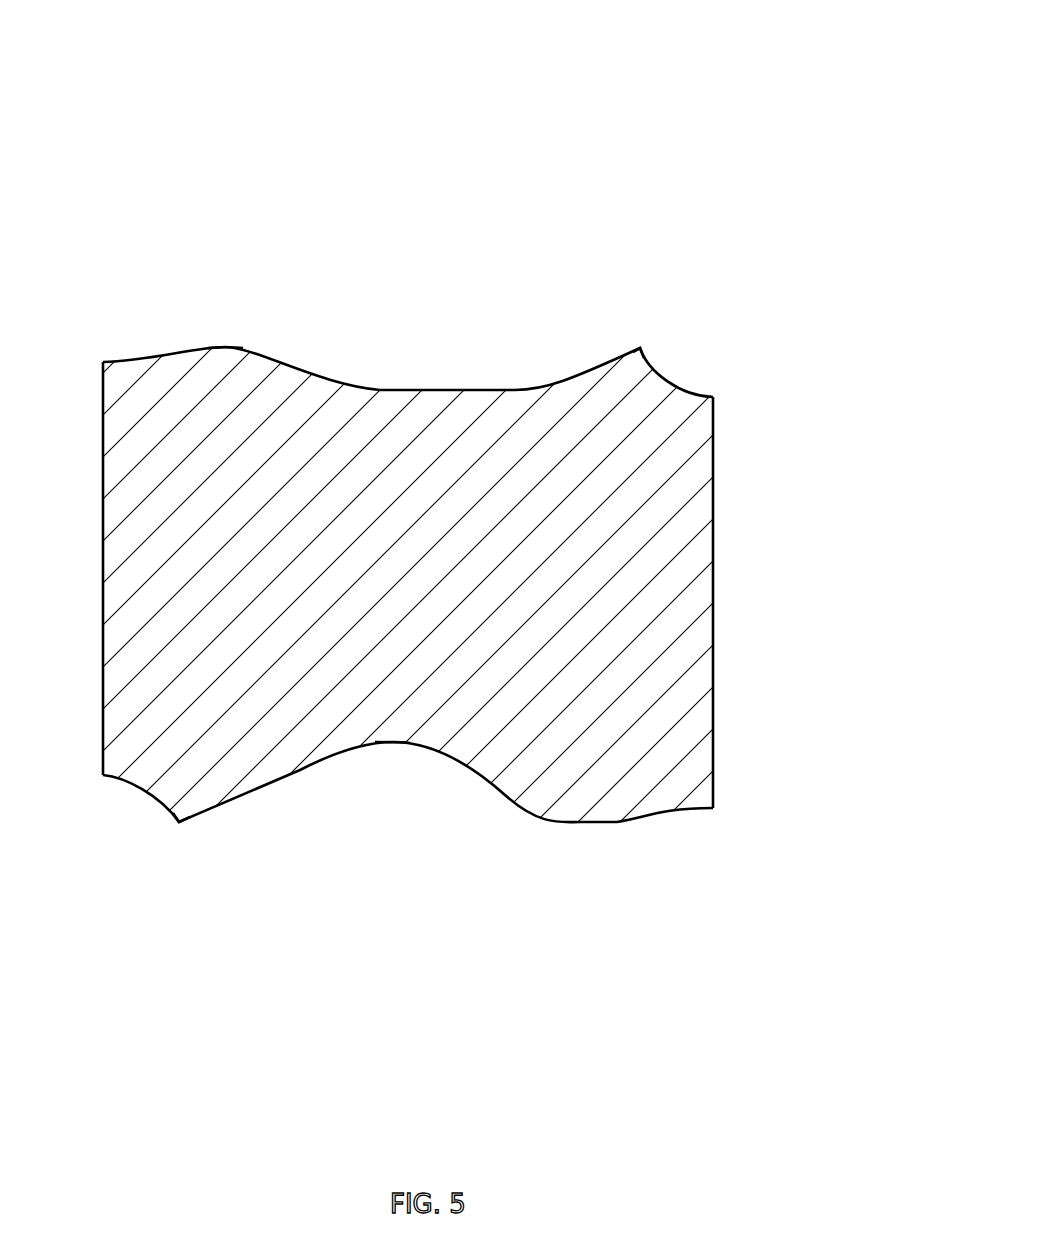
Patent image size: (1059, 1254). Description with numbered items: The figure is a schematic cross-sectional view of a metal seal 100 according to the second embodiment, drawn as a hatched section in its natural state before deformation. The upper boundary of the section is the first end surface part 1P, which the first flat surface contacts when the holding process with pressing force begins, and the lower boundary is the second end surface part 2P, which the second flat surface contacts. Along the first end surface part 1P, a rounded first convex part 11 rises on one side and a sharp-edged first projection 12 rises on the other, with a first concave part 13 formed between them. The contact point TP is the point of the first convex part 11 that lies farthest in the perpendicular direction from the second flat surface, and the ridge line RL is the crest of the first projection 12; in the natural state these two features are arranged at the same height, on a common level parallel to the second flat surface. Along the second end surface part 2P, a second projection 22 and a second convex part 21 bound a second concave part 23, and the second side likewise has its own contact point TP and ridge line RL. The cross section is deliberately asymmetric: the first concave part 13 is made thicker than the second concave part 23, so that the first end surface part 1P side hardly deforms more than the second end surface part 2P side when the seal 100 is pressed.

The metal seal 100 is at (625, 161).
The first end surface part 1P is at (408, 251).
The second end surface part 2P is at (394, 904).
The first convex part 11 is at (257, 340).
The first projection 12 is at (614, 301).
The first concave part 13 is at (415, 384).
The second convex part 21 is at (621, 891).
The second projection 22 is at (257, 810).
The second concave part 23 is at (400, 760).
The contact point TP is at (228, 340).
The ridge line RL is at (640, 343).